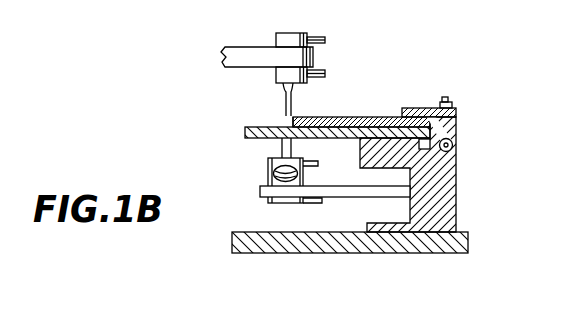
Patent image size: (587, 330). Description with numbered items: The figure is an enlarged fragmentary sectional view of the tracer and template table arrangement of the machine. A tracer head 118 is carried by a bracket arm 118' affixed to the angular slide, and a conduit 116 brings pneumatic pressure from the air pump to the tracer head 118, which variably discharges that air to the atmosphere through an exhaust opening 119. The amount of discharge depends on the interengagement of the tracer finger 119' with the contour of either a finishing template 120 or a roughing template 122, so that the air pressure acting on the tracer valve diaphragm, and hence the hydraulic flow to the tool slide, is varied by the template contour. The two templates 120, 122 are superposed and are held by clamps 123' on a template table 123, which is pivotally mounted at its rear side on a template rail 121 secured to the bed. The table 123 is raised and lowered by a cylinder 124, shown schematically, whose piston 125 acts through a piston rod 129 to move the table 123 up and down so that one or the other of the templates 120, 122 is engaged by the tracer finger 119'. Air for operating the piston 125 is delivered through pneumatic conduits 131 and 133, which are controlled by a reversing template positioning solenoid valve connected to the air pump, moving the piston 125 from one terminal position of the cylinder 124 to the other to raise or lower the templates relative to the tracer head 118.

The conduit 116 is at (323, 38).
The tracer head 118 is at (285, 26).
The bracket arm 118' is at (255, 71).
The exhaust opening 119 is at (318, 80).
The tracer finger 119' is at (264, 99).
The finishing template 120 is at (324, 117).
The roughing template 122 is at (293, 121).
The template table 123 is at (344, 174).
The clamps 123' is at (456, 112).
The template rail 121 is at (378, 254).
The piston rod 129 is at (282, 151).
The piston 125 is at (270, 174).
The cylinder 124 is at (270, 200).
The pneumatic conduit 133 is at (309, 162).
The pneumatic conduit 131 is at (322, 200).